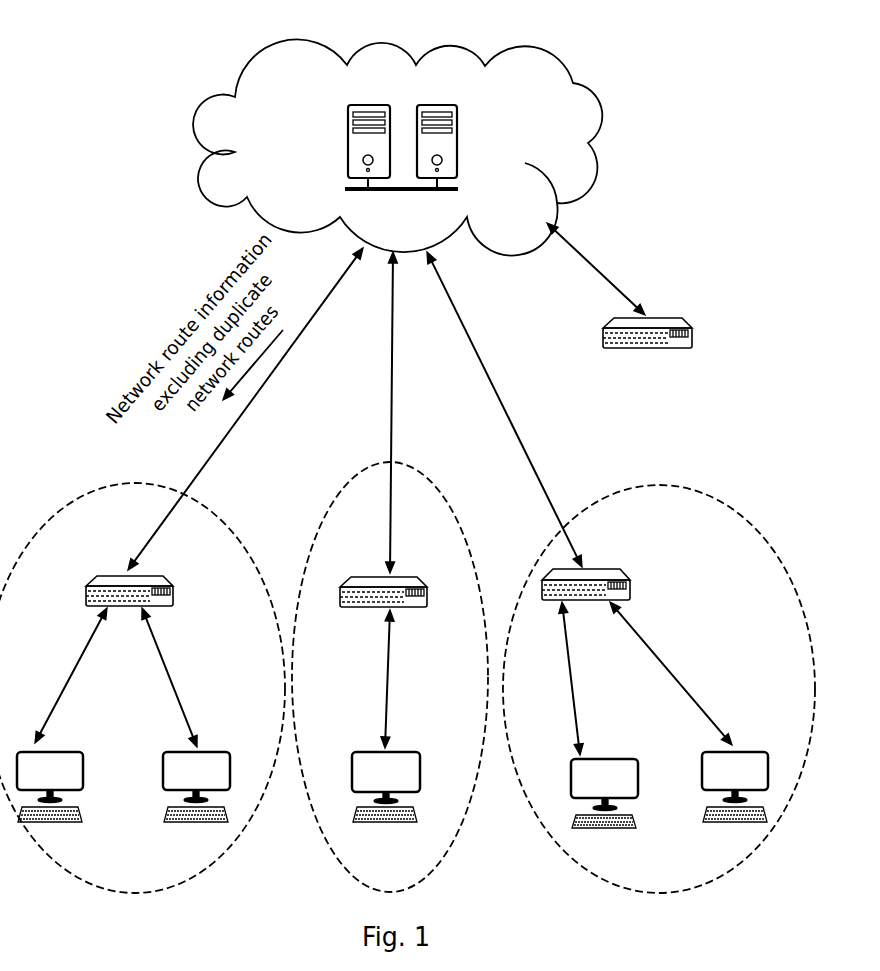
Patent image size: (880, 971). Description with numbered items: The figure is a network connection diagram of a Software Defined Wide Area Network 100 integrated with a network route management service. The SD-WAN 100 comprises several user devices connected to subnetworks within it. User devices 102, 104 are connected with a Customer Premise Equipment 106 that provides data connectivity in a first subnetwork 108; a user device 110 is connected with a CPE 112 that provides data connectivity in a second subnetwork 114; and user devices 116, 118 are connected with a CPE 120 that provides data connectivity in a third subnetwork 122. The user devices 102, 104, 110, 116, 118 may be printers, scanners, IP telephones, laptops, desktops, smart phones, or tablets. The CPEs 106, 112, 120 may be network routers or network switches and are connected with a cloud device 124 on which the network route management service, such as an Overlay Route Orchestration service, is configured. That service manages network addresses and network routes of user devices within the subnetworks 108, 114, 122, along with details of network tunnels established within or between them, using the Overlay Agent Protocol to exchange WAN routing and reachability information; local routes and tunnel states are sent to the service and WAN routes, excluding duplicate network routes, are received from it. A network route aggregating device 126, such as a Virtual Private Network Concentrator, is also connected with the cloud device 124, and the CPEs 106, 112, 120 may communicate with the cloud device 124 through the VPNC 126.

The Software Defined Wide Area Network 100 is at (116, 51).
The user device 102 is at (72, 753).
The user device 104 is at (230, 760).
The Customer Premise Equipment 106 is at (173, 600).
The first subnetwork 108 is at (78, 497).
The user device 110 is at (418, 757).
The Customer Premise Equipment 112 is at (417, 580).
The second subnetwork 114 is at (447, 493).
The user device 116 is at (605, 755).
The user device 118 is at (770, 767).
The Customer Premise Equipment 120 is at (628, 578).
The third subnetwork 122 is at (715, 485).
The cloud device 124 is at (458, 158).
The network route aggregating device 126 is at (690, 328).